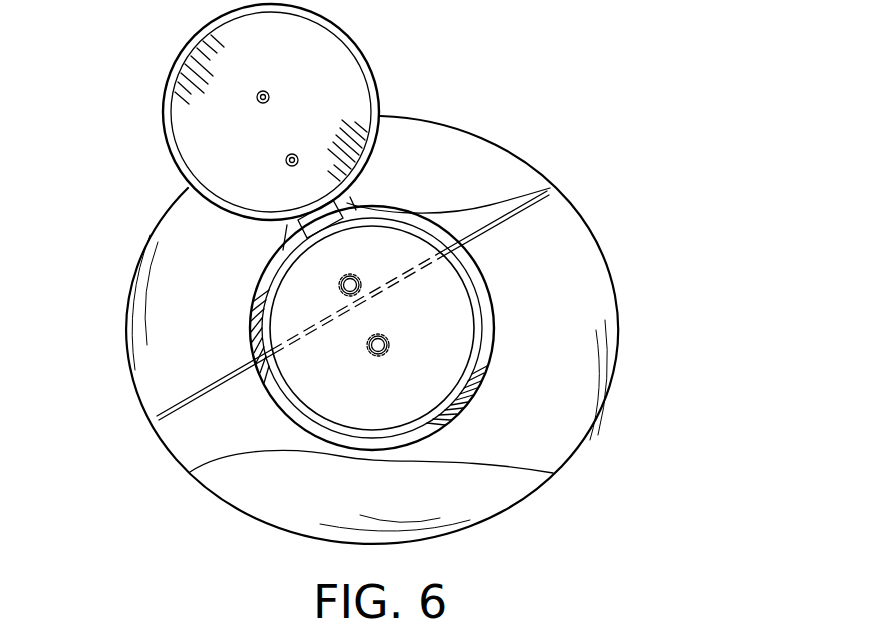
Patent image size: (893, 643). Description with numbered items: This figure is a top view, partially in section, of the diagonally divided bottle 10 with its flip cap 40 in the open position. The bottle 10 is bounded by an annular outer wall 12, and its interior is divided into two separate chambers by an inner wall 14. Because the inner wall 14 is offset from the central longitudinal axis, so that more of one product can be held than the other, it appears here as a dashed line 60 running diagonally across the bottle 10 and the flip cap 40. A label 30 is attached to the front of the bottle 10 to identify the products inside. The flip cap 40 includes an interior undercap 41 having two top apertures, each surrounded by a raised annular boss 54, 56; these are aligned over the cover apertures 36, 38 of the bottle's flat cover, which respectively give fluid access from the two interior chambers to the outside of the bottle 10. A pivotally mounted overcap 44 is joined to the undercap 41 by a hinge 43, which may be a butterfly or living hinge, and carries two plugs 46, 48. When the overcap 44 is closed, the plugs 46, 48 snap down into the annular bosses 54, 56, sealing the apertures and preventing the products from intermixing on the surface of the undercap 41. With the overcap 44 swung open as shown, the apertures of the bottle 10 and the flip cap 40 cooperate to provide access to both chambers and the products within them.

The diagonally divided bottle 10 is at (632, 207).
The annular outer wall 12 is at (613, 360).
The inner wall 14 is at (160, 418).
The label 30 is at (457, 492).
The cover aperture 36 is at (339, 283).
The cover aperture 38 is at (373, 367).
The flip cap 40 is at (482, 337).
The interior undercap 41 is at (428, 307).
The hinge 43 is at (290, 232).
The overcap 44 is at (363, 50).
The plug 46 is at (285, 160).
The plug 48 is at (270, 95).
The annular boss 54 is at (395, 233).
The annular boss 56 is at (402, 337).
The dashed line 60 is at (451, 233).